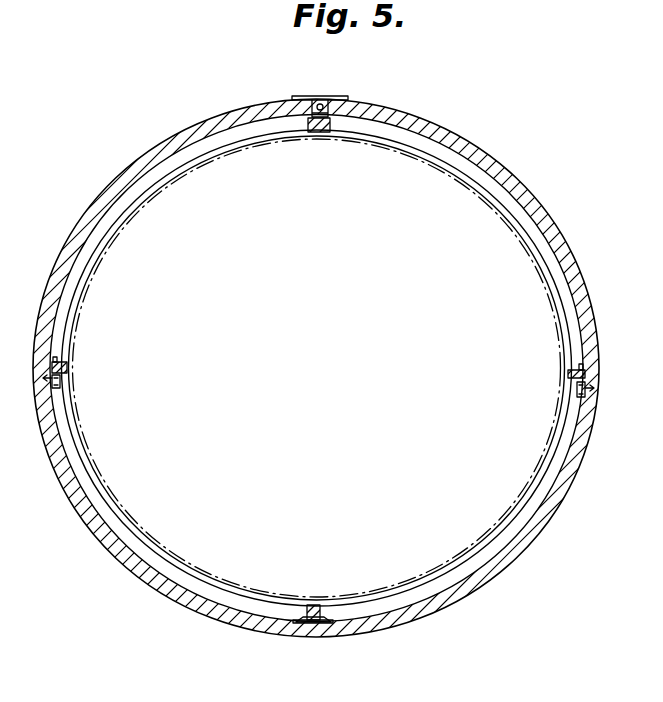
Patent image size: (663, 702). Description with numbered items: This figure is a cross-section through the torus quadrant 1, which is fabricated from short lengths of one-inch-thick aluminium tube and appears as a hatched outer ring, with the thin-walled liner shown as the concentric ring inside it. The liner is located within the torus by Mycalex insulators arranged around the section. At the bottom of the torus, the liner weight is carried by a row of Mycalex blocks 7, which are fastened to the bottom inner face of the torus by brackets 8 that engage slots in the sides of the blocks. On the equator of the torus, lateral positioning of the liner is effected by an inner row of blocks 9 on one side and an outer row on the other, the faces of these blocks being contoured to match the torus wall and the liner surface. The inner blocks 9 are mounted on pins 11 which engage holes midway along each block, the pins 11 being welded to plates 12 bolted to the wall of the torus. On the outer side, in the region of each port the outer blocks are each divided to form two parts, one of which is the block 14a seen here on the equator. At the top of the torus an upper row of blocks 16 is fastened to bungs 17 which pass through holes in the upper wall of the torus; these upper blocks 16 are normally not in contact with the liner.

The torus quadrant 1 is at (133, 165).
The Mycalex blocks 7 is at (318, 605).
The brackets 8 is at (305, 613).
The inner row of blocks 9 is at (67, 367).
The pins 11 is at (60, 357).
The plates 12 is at (140, 240).
The outer block 14a is at (572, 378).
The upper row of blocks 16 is at (318, 133).
The bungs 17 is at (318, 97).